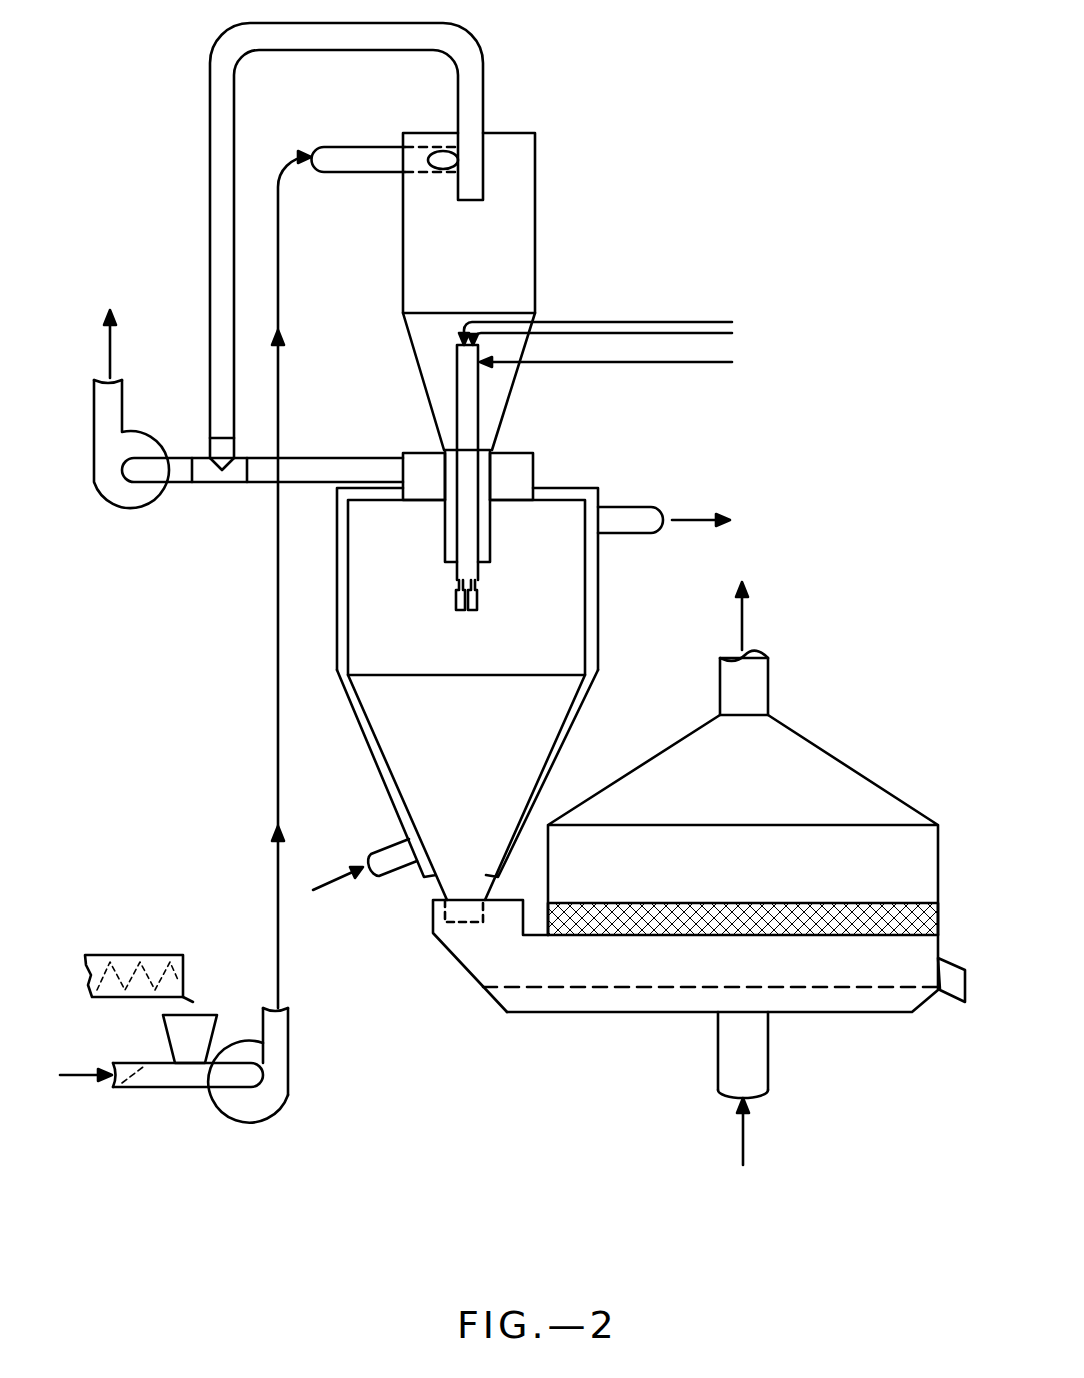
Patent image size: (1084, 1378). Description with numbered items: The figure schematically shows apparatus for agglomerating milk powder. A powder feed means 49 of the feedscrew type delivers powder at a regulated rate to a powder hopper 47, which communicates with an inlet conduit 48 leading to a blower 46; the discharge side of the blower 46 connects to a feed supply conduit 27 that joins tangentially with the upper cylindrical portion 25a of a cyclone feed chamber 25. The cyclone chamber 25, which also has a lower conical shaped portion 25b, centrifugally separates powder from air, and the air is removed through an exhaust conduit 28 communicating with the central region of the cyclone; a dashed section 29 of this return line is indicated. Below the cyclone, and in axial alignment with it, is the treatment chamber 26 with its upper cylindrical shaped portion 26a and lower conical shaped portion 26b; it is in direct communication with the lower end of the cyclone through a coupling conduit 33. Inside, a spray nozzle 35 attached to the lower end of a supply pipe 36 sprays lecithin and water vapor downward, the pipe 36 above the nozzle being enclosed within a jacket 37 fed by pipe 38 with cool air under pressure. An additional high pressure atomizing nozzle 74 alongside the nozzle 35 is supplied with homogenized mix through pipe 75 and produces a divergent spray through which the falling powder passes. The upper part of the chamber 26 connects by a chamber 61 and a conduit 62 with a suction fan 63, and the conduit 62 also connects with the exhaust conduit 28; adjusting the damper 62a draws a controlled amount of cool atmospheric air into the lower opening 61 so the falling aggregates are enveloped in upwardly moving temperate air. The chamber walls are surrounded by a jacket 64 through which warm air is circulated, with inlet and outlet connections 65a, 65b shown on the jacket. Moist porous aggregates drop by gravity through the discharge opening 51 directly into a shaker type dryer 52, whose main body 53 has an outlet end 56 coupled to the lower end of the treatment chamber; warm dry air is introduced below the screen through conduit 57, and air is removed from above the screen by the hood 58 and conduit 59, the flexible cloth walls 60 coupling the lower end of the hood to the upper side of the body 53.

The cyclone feed chamber 25 is at (523, 291).
The upper cylindrical portion 25a is at (535, 178).
The lower conical shaped portion 25b is at (505, 395).
The treatment chamber 26 is at (521, 694).
The upper cylindrical shaped portion 26a is at (590, 562).
The lower conical shaped portion 26b is at (560, 735).
The feed supply conduit 27 is at (357, 157).
The exhaust conduit 28 is at (218, 167).
The conduit section 29 is at (350, 28).
The coupling conduit 33 is at (447, 522).
The spray nozzle 35 is at (479, 601).
The supply pipe 36 is at (637, 337).
The jacket 37 is at (465, 378).
The pipe 38 is at (633, 368).
The blower 46 is at (270, 1105).
The powder hopper 47 is at (198, 1020).
The inlet conduit 48 is at (172, 1090).
The powder feed means 49 is at (148, 952).
The discharge opening 51 is at (465, 923).
The dryer 52 is at (734, 997).
The main body 53 is at (558, 1003).
The outlet end 56 is at (435, 918).
The conduit 57 is at (757, 1070).
The hood 58 is at (852, 785).
The conduit 59 is at (755, 692).
The flexible cloth walls 60 is at (918, 922).
The chamber 61 is at (428, 468).
The conduit 62 is at (383, 470).
The damper 62a is at (310, 477).
The suction fan 63 is at (120, 508).
The jacket 64 is at (598, 648).
The inlet pipe 65a is at (385, 852).
The outlet pipe 65b is at (640, 518).
The additional nozzle 74 is at (457, 598).
The pipe 75 is at (611, 320).